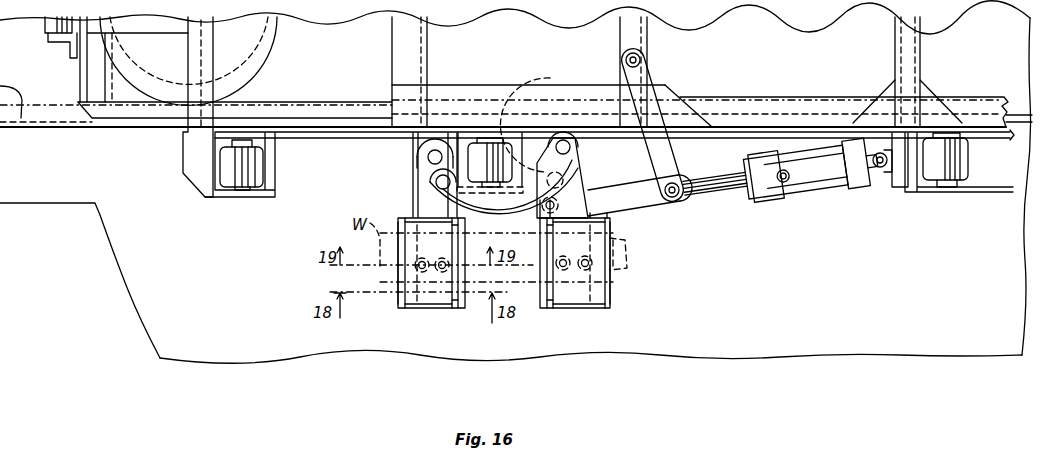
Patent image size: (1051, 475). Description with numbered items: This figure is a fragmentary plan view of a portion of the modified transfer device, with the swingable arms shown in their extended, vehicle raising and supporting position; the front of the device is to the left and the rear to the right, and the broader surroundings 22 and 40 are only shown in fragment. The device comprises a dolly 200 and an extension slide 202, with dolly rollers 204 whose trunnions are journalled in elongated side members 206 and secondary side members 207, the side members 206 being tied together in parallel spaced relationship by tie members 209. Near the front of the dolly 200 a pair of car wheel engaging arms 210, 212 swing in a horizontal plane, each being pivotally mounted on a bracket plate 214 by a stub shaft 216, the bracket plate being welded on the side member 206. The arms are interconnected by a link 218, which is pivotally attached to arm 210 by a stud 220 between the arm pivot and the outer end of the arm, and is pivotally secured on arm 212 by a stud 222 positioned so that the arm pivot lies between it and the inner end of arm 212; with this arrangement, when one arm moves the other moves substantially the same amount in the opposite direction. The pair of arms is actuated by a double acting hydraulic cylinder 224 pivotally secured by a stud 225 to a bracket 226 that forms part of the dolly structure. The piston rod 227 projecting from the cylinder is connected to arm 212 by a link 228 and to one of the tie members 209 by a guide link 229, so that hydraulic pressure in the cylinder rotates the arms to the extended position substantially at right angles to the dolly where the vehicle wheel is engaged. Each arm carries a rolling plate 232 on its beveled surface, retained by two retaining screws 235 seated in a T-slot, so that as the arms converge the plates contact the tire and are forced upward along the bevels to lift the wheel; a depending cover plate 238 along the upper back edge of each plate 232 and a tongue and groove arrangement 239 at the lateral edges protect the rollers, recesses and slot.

The work table 22 is at (889, 338).
The rail 40 is at (1022, 108).
The dolly 200 is at (165, 145).
The extension slide 202 is at (115, 120).
The dolly rollers 204 is at (235, 167).
The elongated side members 206 is at (300, 134).
The secondary side members 207 is at (245, 196).
The tie members 209 is at (405, 53).
The arm 210 is at (433, 312).
The arm 212 is at (567, 312).
The bracket plate 214 is at (415, 160).
The stub shaft 216 is at (428, 157).
The link 218 is at (488, 205).
The stud 220 is at (436, 181).
The stud 222 is at (558, 140).
The double acting hydraulic cylinder 224 is at (812, 182).
The stud 225 is at (886, 165).
The bracket 226 is at (900, 173).
The piston rod 227 is at (710, 192).
The link 228 is at (625, 201).
The guide link 229 is at (663, 152).
The rolling plate 232 is at (427, 298).
The retaining screws 235 is at (441, 260).
The depending cover plate 238 is at (398, 297).
The tongue and groove arrangement 239 is at (460, 312).